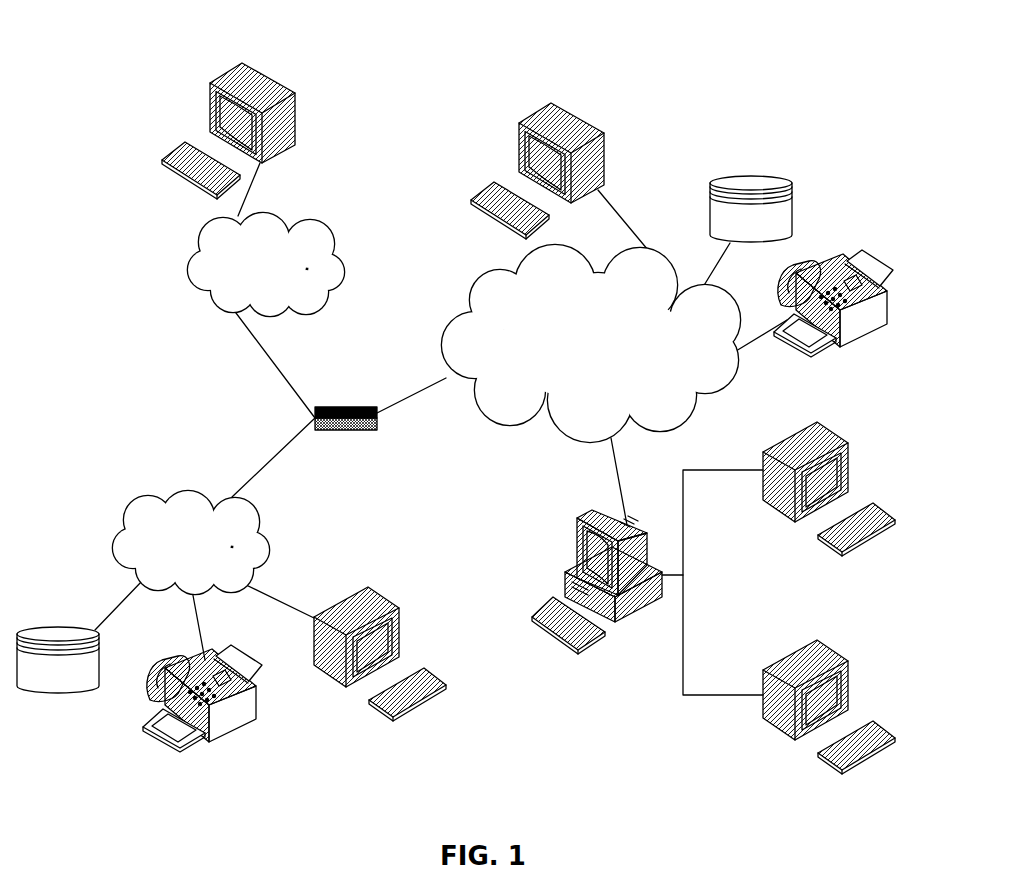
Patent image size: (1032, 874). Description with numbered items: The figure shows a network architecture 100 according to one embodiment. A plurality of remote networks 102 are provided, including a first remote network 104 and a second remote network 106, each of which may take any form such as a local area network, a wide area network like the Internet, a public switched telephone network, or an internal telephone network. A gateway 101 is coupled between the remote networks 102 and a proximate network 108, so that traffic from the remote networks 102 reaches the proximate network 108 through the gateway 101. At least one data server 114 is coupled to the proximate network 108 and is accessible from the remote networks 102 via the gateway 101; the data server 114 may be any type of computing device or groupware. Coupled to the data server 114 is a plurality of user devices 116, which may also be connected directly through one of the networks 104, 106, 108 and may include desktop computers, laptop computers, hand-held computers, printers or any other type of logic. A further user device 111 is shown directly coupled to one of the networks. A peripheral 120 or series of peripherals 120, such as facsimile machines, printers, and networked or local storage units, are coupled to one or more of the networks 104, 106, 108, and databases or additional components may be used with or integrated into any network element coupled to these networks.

The architecture 100 is at (140, 45).
The gateway 101 is at (326, 407).
The remote networks 102 is at (168, 326).
The first remote network 104 is at (117, 514).
The second remote network 106 is at (334, 233).
The proximate network 108 is at (696, 410).
The user device 111 is at (603, 135).
The data server 114 is at (577, 537).
The user devices 116 is at (295, 102).
The peripheral 120 is at (792, 185).